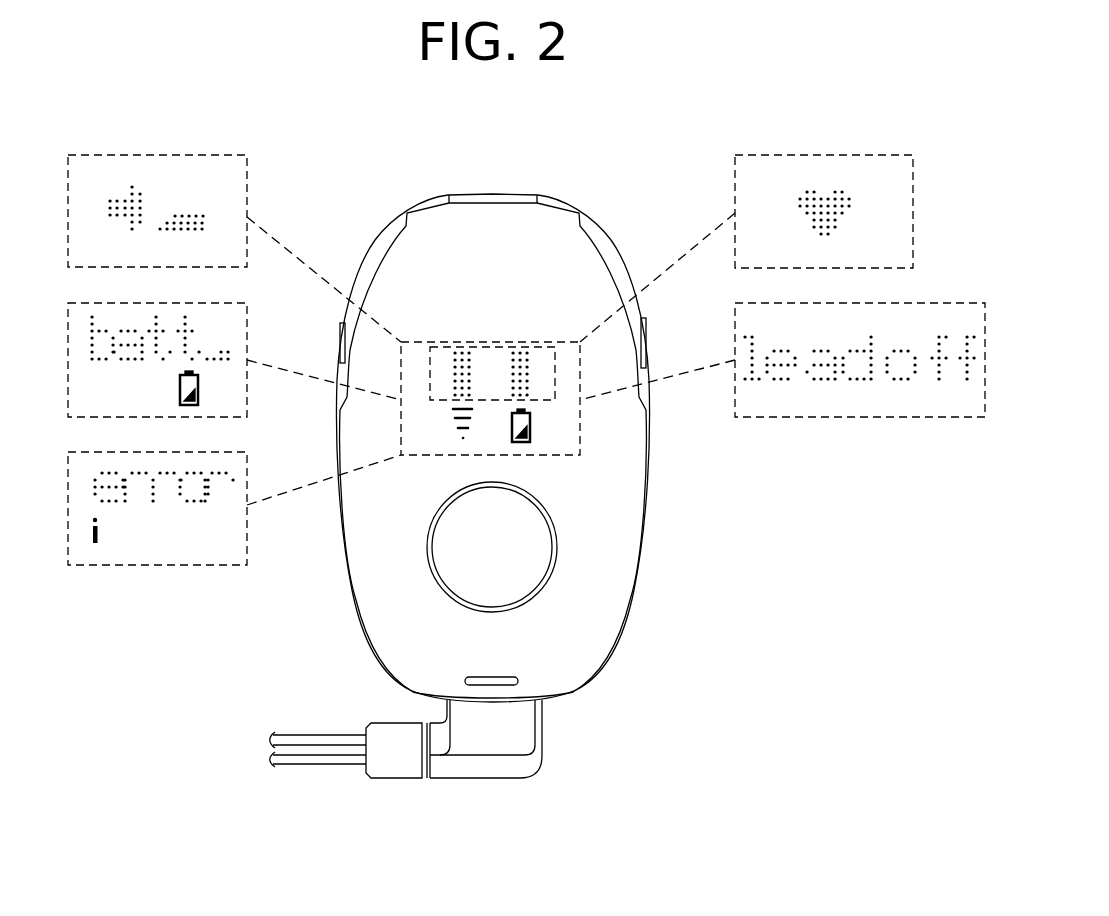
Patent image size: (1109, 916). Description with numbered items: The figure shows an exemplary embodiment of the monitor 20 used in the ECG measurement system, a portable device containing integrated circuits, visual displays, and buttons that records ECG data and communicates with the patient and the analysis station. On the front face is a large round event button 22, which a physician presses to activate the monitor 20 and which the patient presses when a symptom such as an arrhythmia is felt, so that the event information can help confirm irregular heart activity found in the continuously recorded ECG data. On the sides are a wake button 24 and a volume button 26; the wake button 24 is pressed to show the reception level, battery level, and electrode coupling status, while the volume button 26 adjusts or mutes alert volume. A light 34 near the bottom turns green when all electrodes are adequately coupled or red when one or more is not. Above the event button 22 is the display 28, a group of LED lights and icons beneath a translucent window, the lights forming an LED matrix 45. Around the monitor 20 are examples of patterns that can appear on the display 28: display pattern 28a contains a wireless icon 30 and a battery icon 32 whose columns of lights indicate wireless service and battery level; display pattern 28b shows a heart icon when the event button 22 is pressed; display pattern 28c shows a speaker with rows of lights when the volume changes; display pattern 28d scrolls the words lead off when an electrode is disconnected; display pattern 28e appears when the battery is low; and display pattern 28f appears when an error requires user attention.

The monitor 20 is at (382, 216).
The event button 22 is at (552, 518).
The wake button 24 is at (340, 343).
The volume button 26 is at (645, 343).
The display 28 is at (552, 341).
The display pattern 28a is at (426, 341).
The display pattern 28b is at (822, 155).
The display pattern 28c is at (157, 155).
The display pattern 28d is at (848, 417).
The display pattern 28e is at (247, 393).
The display pattern 28f is at (157, 565).
The wireless icon 30 is at (452, 427).
The battery icon 32 is at (530, 427).
The light 34 is at (492, 677).
The LED matrix 45 is at (502, 347).